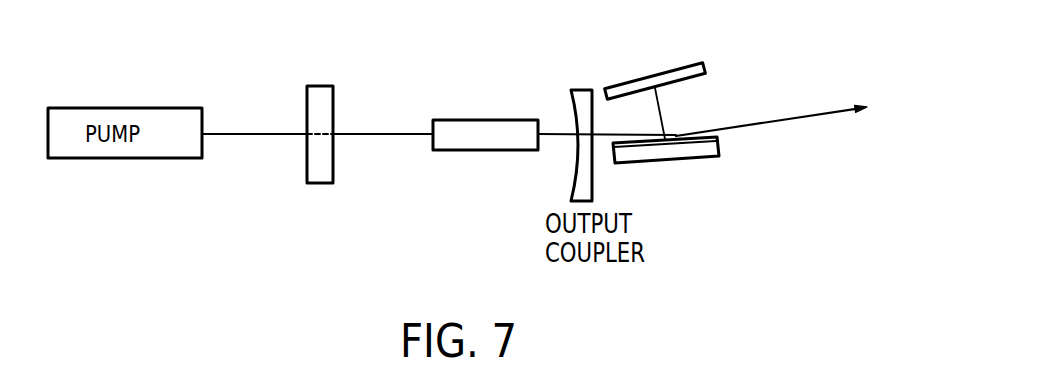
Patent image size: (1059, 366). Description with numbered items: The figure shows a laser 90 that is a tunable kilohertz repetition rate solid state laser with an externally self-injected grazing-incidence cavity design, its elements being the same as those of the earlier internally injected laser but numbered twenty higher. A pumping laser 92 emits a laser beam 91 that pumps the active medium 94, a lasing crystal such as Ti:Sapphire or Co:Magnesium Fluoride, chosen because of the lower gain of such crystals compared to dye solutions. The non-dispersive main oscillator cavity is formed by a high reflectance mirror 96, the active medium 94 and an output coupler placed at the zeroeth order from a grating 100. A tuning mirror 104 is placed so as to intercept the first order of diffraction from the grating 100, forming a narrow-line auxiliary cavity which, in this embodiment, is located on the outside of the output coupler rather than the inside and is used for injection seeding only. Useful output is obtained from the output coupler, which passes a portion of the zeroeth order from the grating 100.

The laser 90 is at (451, 274).
The laser beam 91 is at (240, 131).
The pumping laser 92 is at (846, 108).
The active medium 94 is at (483, 119).
The high reflectance mirror 96 is at (334, 102).
The grating 100 is at (719, 147).
The tuning mirror 104 is at (704, 70).